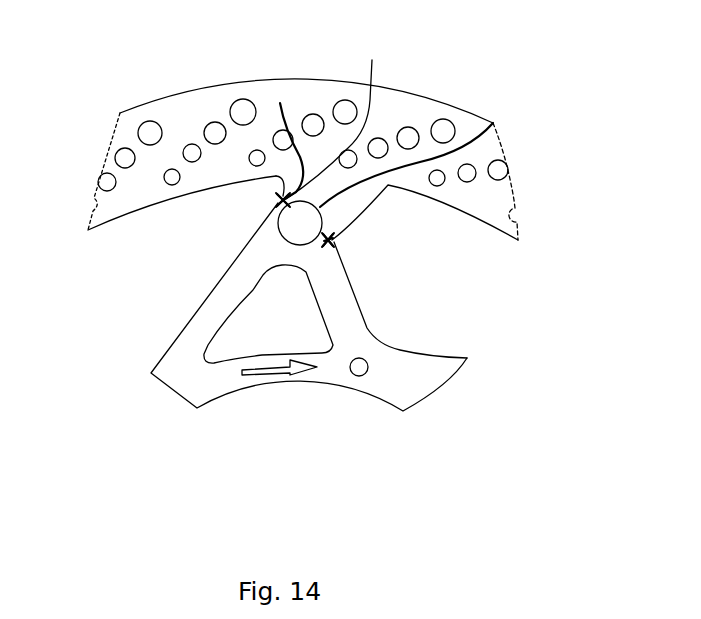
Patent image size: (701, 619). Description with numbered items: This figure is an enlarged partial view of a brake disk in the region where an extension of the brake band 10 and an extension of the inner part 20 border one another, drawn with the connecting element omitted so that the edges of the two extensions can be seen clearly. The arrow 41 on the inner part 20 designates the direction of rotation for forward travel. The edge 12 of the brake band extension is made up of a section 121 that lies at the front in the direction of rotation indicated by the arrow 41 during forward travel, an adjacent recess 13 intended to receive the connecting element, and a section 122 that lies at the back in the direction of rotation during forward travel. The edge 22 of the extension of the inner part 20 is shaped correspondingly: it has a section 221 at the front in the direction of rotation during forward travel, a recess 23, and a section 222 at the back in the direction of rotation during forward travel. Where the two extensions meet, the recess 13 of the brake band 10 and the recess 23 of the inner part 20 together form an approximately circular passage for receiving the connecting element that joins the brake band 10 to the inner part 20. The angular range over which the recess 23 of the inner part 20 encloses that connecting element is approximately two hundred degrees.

The brake band 10 is at (393, 108).
The edge 12 is at (372, 60).
The recess 13 is at (493, 123).
The section 121 is at (328, 239).
The section 122 is at (280, 103).
The inner part 20 is at (178, 375).
The edge 22 is at (308, 245).
The recess 23 is at (293, 245).
The section 221 is at (327, 242).
The section 222 is at (279, 203).
The arrow 41 is at (273, 372).